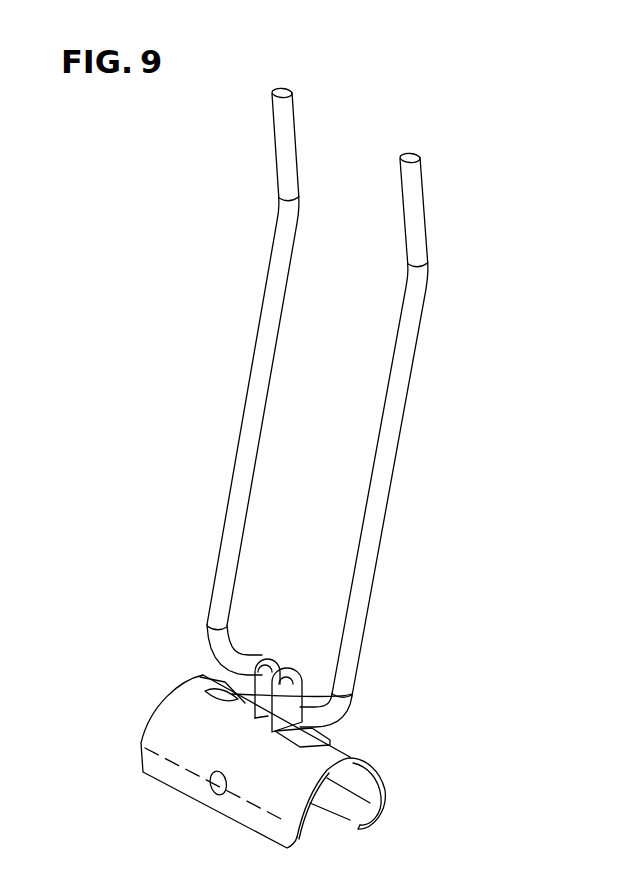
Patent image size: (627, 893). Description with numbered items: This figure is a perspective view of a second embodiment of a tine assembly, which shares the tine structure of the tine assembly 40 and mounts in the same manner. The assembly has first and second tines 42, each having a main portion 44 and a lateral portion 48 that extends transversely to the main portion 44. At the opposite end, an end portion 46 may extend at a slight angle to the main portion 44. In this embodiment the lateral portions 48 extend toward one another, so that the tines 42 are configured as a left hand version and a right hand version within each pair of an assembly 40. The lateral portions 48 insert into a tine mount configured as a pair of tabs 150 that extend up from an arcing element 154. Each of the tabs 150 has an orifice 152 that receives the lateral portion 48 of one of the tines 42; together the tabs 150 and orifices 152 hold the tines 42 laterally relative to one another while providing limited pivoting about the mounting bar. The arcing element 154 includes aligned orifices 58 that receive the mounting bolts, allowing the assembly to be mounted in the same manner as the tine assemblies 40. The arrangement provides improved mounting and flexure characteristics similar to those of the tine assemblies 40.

The tine assembly 40 is at (518, 253).
The tines 42 is at (374, 360).
The main portion 44 is at (255, 372).
The end portion 46 is at (288, 120).
The lateral portion 48 is at (240, 670).
The aligned orifices 58 is at (215, 792).
The tabs 150 is at (267, 658).
The orifice 152 is at (213, 690).
The arcing element 154 is at (267, 798).